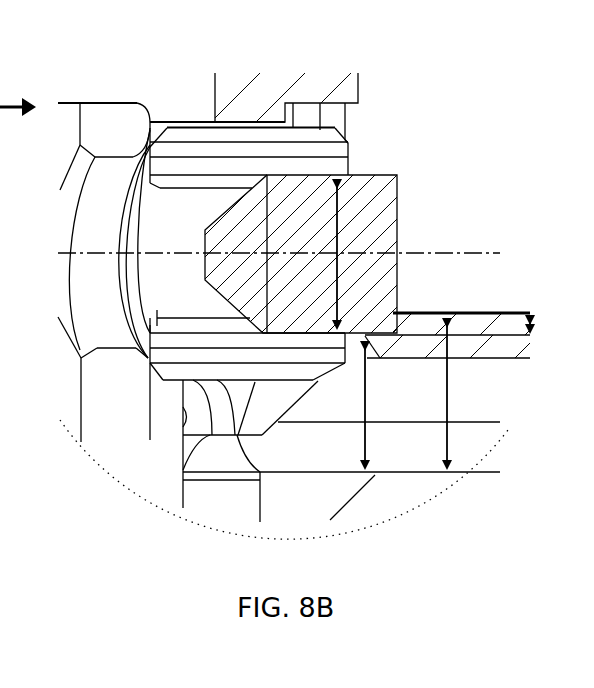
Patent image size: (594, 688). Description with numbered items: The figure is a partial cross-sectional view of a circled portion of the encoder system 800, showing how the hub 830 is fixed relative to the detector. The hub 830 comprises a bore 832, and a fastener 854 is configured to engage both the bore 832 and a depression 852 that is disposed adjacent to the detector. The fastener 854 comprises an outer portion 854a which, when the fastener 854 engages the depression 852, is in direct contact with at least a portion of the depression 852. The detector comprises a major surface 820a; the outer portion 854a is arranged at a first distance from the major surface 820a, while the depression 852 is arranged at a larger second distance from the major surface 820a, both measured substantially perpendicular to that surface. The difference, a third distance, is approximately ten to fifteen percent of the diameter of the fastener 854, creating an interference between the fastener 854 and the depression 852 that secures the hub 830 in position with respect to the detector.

The encoder system 800 is at (108, 28).
The major surface 820a is at (418, 474).
The hub 830 is at (135, 460).
The bore 832 is at (148, 358).
The depression 852 is at (510, 312).
The fastener 854 is at (220, 247).
The outer portion 854a is at (287, 335).